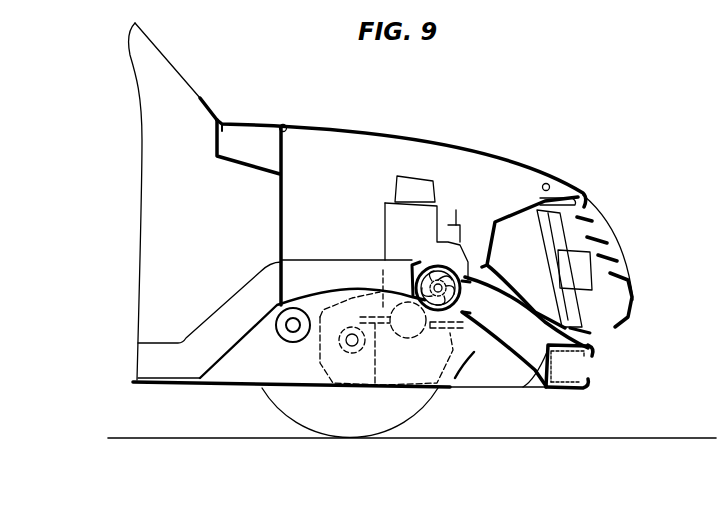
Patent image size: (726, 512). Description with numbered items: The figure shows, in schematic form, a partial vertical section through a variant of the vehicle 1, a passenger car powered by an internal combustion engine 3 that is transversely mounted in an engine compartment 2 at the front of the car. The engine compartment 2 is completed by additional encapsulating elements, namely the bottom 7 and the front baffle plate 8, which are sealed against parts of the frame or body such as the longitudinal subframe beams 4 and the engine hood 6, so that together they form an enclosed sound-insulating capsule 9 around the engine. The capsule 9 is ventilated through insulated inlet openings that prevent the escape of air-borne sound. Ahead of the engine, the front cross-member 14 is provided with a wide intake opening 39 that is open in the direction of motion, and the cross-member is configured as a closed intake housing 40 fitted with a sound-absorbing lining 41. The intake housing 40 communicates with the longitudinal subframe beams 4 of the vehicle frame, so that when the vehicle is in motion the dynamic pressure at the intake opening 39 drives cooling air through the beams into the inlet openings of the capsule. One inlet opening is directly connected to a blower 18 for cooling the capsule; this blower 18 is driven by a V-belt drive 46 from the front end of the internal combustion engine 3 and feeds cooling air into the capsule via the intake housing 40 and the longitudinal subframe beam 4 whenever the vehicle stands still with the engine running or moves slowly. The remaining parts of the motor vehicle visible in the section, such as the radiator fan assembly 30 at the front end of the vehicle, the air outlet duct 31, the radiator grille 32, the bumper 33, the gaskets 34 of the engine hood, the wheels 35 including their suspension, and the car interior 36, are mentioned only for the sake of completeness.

The vehicle 1 is at (142, 200).
The engine compartment 2 is at (349, 208).
The internal combustion engine 3 is at (410, 242).
The longitudinal subframe beams 4 is at (318, 272).
The engine hood 6 is at (456, 148).
The bottom 7 is at (247, 392).
The front baffle plate 8 is at (492, 238).
The sound-insulating capsule 9 is at (279, 222).
The front cross-member 14 is at (527, 385).
The blower 18 is at (462, 297).
The radiator fan assembly 30 is at (566, 231).
The air outlet duct 31 is at (488, 362).
The radiator grille 32 is at (601, 258).
The bumper 33 is at (633, 298).
The gaskets of the engine hood 34 is at (285, 124).
The wheels 35 is at (313, 420).
The car interior 36 is at (178, 293).
The intake opening 39 is at (586, 368).
The intake housing 40 is at (576, 386).
The sound-absorbing lining 41 is at (557, 385).
The V-belt drive 46 is at (391, 338).